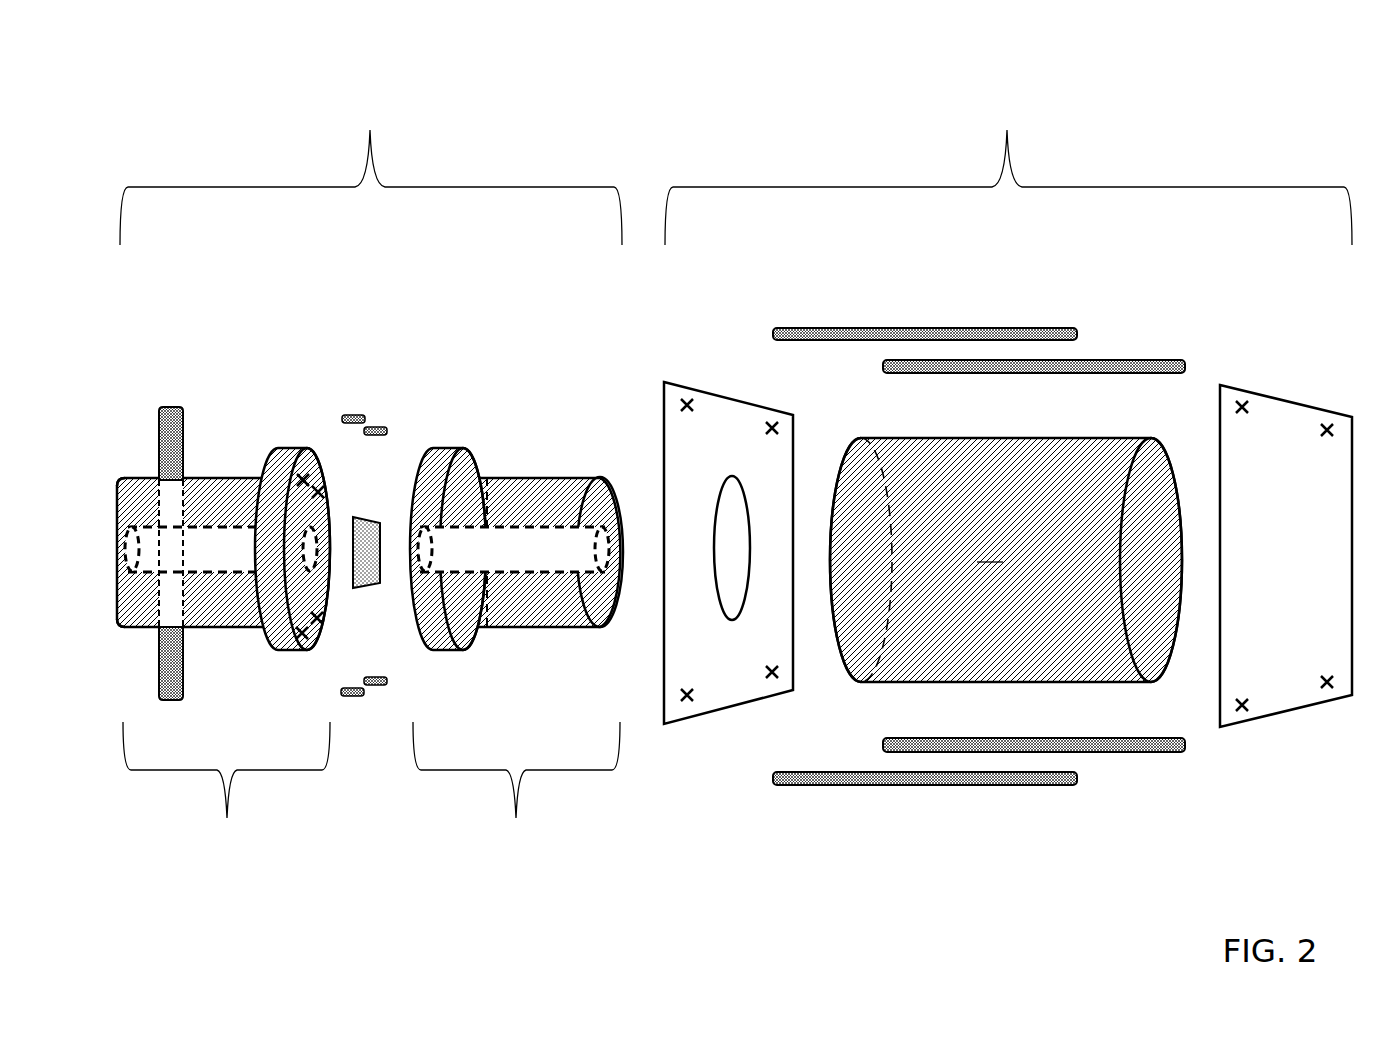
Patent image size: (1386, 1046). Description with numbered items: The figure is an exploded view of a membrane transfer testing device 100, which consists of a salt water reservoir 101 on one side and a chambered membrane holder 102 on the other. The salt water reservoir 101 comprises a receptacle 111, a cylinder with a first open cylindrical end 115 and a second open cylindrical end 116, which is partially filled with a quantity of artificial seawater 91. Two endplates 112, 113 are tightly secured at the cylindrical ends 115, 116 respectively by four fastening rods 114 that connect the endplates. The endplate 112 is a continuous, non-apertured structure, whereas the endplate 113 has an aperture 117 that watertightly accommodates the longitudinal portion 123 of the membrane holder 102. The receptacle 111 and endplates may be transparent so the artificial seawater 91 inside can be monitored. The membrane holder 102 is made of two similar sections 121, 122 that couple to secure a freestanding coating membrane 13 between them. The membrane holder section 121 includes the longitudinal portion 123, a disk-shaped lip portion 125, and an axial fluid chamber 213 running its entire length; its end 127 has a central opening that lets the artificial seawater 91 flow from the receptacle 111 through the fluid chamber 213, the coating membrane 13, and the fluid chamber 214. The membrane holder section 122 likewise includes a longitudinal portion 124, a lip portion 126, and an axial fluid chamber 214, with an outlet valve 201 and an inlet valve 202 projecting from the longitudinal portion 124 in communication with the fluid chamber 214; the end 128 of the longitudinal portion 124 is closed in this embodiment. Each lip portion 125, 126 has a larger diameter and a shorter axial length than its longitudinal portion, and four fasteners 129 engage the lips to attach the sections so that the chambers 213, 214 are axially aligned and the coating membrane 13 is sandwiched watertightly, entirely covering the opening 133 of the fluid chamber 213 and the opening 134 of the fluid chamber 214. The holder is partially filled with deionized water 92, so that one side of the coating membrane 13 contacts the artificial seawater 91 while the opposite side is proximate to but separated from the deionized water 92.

The membrane transfer testing device 100 is at (313, 902).
The salt water reservoir 101 is at (1008, 458).
The membrane holder 102 is at (372, 445).
The receptacle 111 is at (1007, 483).
The endplate 112 is at (1285, 427).
The endplate 113 is at (735, 422).
The fastening rods 114 is at (858, 326).
The first open cylindrical end 115 is at (1156, 537).
The second open cylindrical end 116 is at (860, 626).
The aperture 117 is at (730, 530).
The membrane holder section 121 is at (502, 581).
The membrane holder section 122 is at (235, 563).
The longitudinal portion 123 is at (530, 492).
The longitudinal portion 124 is at (222, 478).
The lip portion 125 is at (440, 450).
The lip portion 126 is at (284, 450).
The end 127 is at (603, 508).
The end 128 is at (138, 602).
The fasteners 129 is at (352, 414).
The opening 133 is at (416, 547).
The opening 134 is at (319, 548).
The coating membrane 13 is at (368, 585).
The outlet valve 201 is at (180, 662).
The inlet valve 202 is at (172, 407).
The axial fluid chamber 213 is at (553, 540).
The axial fluid chamber 214 is at (200, 478).
The artificial seawater 91 is at (514, 561).
The deionized water 92 is at (163, 561).